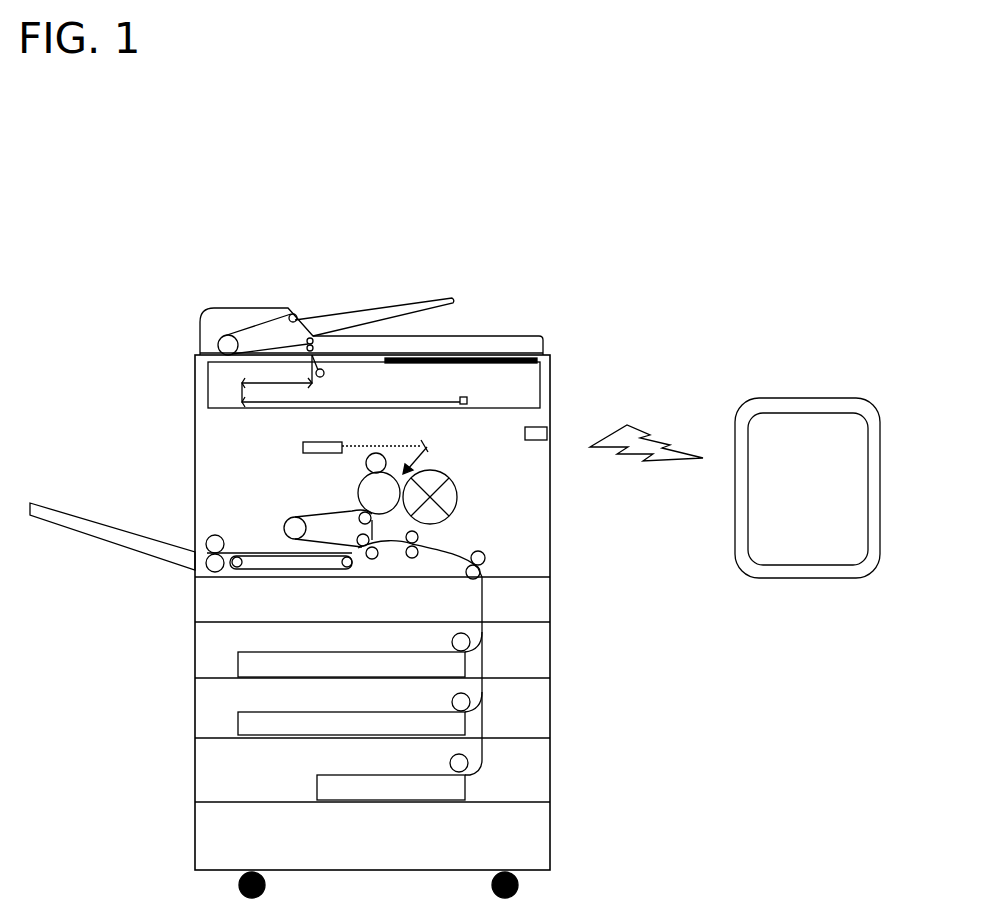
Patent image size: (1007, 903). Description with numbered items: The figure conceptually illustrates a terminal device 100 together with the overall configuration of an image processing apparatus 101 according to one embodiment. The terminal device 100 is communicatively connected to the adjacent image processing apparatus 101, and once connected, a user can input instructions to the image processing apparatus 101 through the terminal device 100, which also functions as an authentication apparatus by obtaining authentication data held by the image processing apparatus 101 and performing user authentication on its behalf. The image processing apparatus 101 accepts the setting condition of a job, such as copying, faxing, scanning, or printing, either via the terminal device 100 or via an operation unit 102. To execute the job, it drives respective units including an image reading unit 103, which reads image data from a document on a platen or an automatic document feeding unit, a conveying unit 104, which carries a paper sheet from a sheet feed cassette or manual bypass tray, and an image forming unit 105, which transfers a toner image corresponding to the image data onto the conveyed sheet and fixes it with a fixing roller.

The terminal device 100 is at (826, 376).
The image processing apparatus 101 is at (452, 280).
The operation unit 102 is at (522, 360).
The image reading unit 103 is at (568, 385).
The conveying unit 104 is at (558, 547).
The image forming unit 105 is at (503, 504).